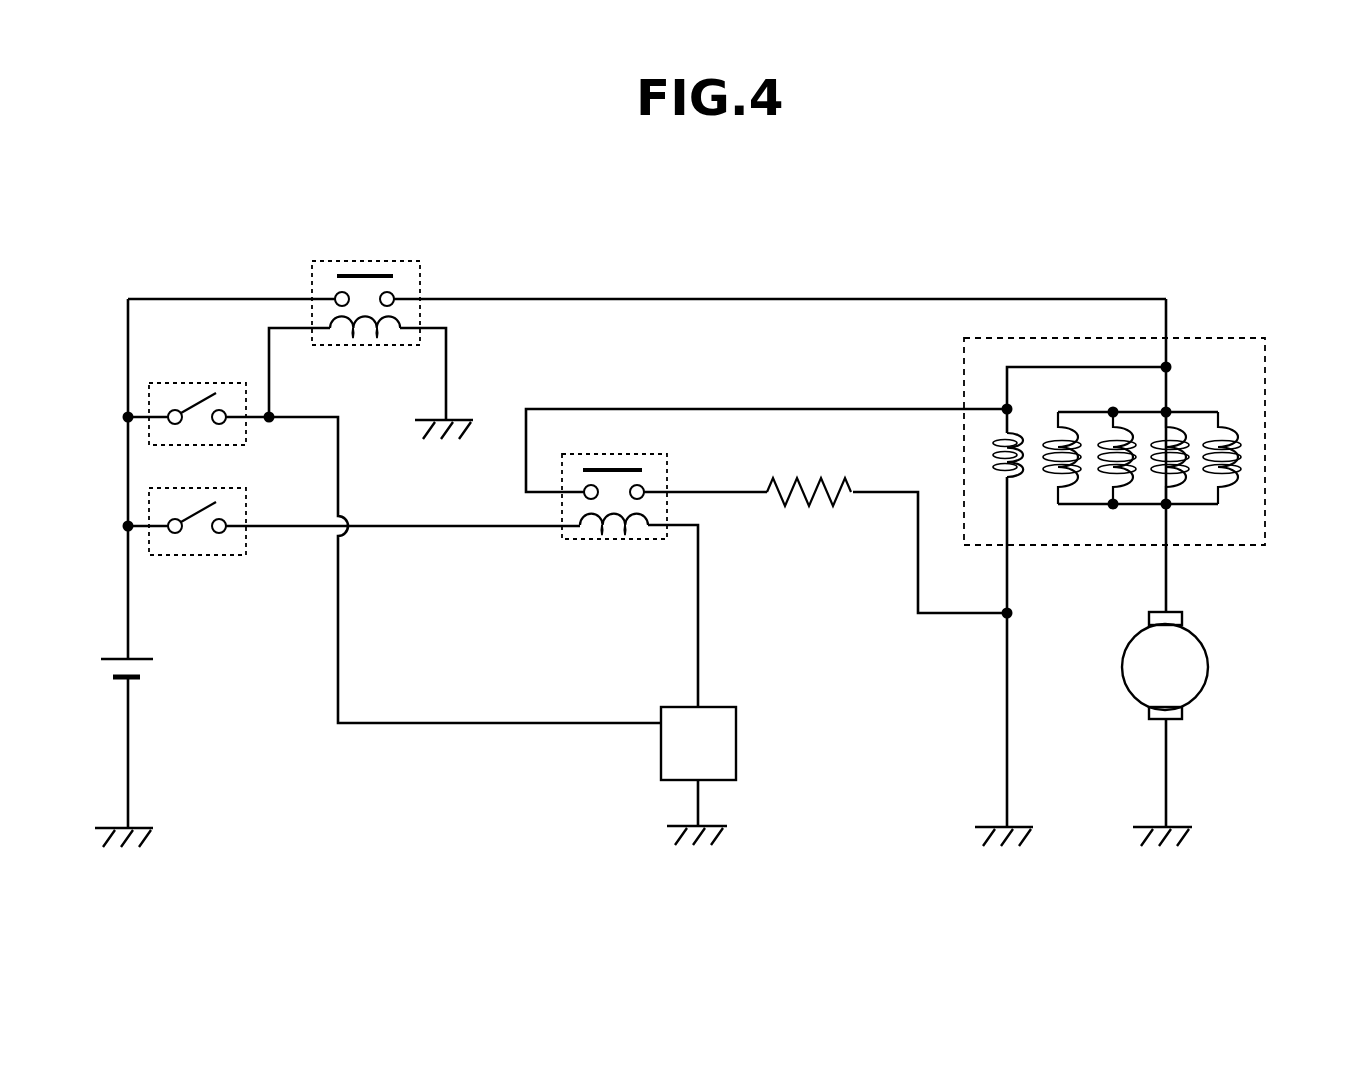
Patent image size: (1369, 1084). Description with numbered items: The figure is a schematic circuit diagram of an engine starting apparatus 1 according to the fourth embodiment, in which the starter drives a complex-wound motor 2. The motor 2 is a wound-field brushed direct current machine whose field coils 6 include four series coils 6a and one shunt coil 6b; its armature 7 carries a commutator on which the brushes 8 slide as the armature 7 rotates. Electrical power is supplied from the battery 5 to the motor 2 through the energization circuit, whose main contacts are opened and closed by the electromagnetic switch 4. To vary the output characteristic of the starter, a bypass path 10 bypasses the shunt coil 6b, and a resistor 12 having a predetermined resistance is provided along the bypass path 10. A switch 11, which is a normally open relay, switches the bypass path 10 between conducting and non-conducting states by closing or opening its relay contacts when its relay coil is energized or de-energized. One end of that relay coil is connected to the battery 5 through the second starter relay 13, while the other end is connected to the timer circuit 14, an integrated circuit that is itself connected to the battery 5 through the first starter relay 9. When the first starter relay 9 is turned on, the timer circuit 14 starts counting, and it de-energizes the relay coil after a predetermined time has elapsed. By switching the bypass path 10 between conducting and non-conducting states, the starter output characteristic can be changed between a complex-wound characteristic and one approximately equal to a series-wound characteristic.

The motor drive circuit 1 is at (848, 236).
The motor 2 is at (1234, 624).
The electromagnetic switch 4 is at (404, 252).
The battery 5 is at (105, 667).
The field coils 6 is at (1114, 441).
The series coils 6a is at (1240, 462).
The shunt coil 6b is at (995, 457).
The armature 7 is at (1200, 663).
The brushes 8 is at (1182, 618).
The first starter relay 9 is at (197, 405).
The bypass path 10 is at (615, 409).
The switch 11 is at (682, 470).
The resistor 12 is at (827, 502).
The second starter relay 13 is at (197, 510).
The timer circuit 14 is at (661, 758).